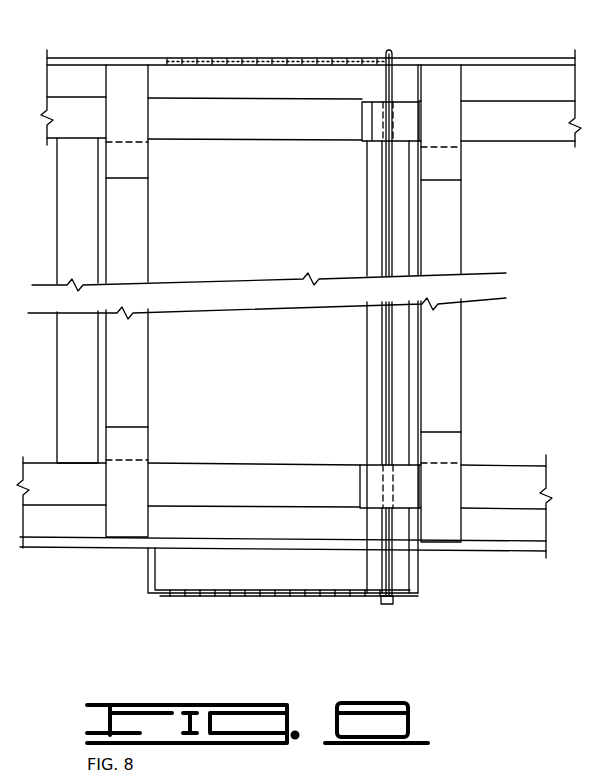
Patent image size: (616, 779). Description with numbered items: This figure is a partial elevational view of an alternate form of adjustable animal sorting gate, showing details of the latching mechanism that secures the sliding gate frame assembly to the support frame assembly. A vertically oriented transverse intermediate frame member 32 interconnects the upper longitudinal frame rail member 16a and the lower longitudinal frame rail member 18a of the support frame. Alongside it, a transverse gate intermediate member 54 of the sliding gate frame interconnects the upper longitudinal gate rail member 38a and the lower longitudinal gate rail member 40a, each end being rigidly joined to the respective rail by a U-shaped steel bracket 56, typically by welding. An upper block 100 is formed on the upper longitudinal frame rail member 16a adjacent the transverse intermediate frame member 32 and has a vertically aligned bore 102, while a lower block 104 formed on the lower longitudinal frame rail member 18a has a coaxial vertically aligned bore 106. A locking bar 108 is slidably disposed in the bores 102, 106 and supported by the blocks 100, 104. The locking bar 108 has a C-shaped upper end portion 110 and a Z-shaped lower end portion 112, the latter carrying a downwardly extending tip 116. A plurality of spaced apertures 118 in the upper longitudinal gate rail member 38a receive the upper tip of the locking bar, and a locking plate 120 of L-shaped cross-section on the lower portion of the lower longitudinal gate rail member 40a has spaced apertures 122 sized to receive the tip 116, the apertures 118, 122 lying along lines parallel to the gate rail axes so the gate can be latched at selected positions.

The upper longitudinal frame rail member 16a is at (526, 110).
The lower longitudinal frame rail member 18a is at (500, 470).
The transverse intermediate frame member 32 is at (65, 248).
The upper longitudinal gate rail member 38a is at (491, 58).
The lower longitudinal gate rail member 40a is at (493, 553).
The transverse gate intermediate member 54 is at (137, 243).
The U-shaped steel bracket 56 is at (137, 132).
The upper block 100 is at (373, 128).
The vertically aligned bore 102 is at (385, 105).
The lower block 104 is at (367, 478).
The vertically aligned bore 106 is at (383, 462).
The locking bar 108 is at (383, 205).
The C-shaped upper end portion 110 is at (386, 50).
The Z-shaped lower end portion 112 is at (387, 565).
The downwardly extending tip 116 is at (388, 604).
The apertures 118 is at (268, 59).
The locking plate 120 is at (147, 573).
The apertures 122 is at (297, 600).